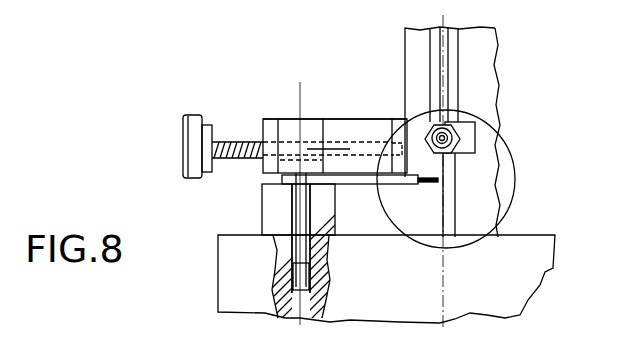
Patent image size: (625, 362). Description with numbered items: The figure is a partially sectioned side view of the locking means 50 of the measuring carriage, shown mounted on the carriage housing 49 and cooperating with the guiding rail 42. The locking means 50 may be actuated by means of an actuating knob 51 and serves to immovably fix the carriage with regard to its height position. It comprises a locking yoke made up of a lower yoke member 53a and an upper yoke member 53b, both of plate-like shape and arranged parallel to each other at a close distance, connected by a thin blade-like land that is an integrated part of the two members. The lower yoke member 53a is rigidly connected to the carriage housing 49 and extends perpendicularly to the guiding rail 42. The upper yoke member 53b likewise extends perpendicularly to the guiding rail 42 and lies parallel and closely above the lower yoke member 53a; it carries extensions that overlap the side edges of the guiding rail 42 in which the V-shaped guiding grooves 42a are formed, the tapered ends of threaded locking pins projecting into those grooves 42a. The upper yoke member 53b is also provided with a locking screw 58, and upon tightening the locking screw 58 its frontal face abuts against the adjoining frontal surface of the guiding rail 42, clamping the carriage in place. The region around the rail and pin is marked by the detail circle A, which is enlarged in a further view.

The guiding rail 42 is at (483, 88).
The V-shaped guiding grooves 42a is at (451, 48).
The detail circle A is at (512, 160).
The carriage housing 49 is at (237, 288).
The locking means 50 is at (350, 110).
The actuating knob 51 is at (172, 135).
The lower yoke member 53a is at (287, 212).
The upper yoke member 53b is at (268, 118).
The locking screw 58 is at (246, 160).